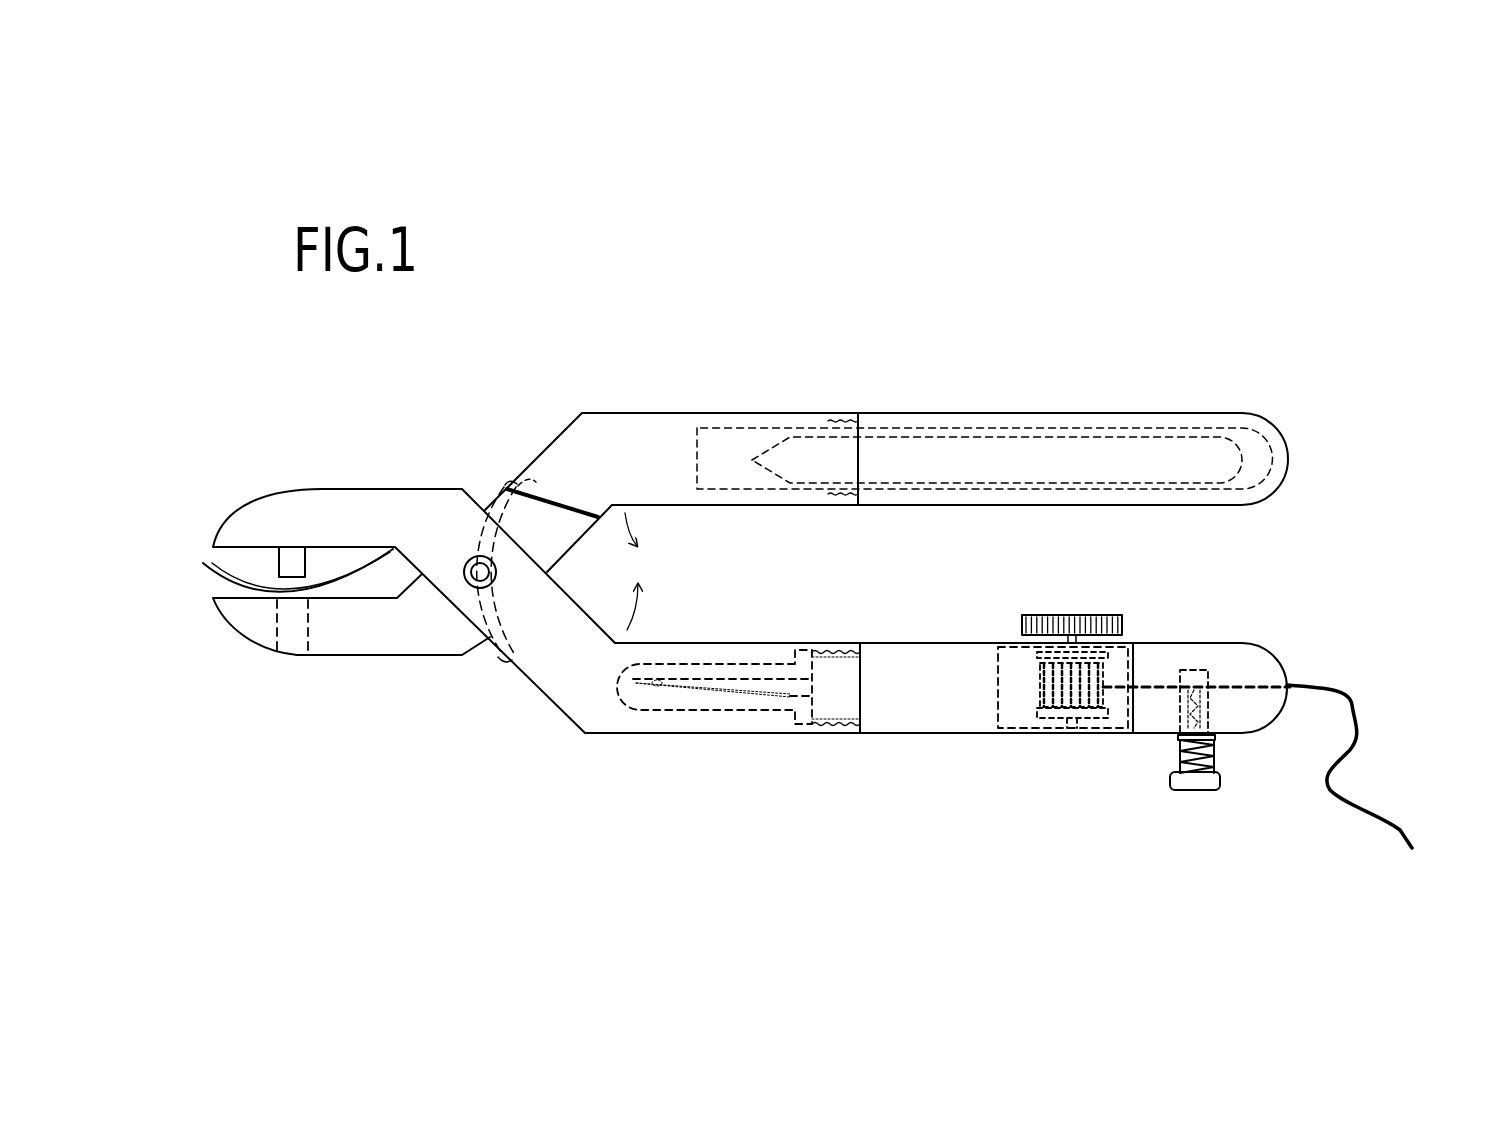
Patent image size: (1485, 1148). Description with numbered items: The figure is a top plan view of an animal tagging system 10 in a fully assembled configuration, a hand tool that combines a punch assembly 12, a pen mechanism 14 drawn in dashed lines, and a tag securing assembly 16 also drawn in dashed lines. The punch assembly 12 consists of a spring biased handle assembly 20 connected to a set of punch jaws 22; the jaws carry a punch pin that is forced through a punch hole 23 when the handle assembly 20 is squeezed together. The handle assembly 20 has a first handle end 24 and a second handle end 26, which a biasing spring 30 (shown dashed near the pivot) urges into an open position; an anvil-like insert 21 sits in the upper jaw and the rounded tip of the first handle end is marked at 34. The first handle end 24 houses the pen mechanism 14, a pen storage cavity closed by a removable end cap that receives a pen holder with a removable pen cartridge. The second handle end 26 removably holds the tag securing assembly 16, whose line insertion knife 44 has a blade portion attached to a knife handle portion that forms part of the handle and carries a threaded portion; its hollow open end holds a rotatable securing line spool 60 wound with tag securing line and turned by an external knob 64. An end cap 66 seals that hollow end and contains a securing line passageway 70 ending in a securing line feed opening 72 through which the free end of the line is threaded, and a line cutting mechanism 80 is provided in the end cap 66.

The animal tagging system 10 is at (1177, 380).
The punch assembly 12 is at (372, 480).
The pen mechanism 14 is at (998, 455).
The tag securing assembly 16 is at (915, 742).
The handle assembly 20 is at (512, 462).
The anvil insert 21 is at (290, 560).
The punch jaws 22 is at (230, 632).
The punch hole 23 is at (290, 653).
The first handle end 24 is at (665, 412).
The second handle end 26 is at (750, 738).
The biasing spring 30 is at (492, 640).
The handle end 34 is at (1286, 470).
The line insertion knife 44 is at (908, 645).
The securing line spool 60 is at (1057, 713).
The external knob 64 is at (1092, 617).
The end cap 66 is at (1262, 643).
The securing line passageway 70 is at (1250, 693).
The securing line feed opening 72 is at (1290, 684).
The line cutting mechanism 80 is at (1212, 783).